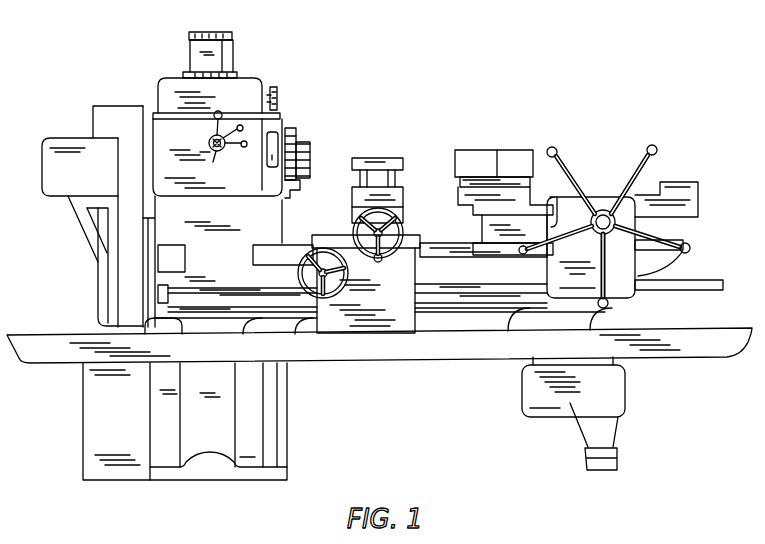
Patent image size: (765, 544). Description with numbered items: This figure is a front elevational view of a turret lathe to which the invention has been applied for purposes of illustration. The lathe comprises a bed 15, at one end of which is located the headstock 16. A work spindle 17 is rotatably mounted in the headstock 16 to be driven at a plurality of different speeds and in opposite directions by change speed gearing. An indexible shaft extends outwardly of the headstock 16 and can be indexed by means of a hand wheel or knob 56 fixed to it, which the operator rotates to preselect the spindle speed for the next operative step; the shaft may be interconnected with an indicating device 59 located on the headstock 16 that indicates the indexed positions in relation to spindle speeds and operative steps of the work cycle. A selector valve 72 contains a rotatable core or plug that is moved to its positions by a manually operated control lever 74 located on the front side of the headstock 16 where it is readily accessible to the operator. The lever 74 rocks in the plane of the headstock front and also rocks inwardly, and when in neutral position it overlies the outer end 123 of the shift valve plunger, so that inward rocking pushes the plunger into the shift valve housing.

The bed 15 is at (248, 273).
The headstock 16 is at (252, 148).
The work spindle 17 is at (310, 156).
The hand wheel or knob 56 is at (272, 88).
The indicating device 59 is at (212, 55).
The selector valve 72 is at (213, 163).
The control lever 74 is at (209, 142).
The outer end of the shift valve plunger 123 is at (233, 150).